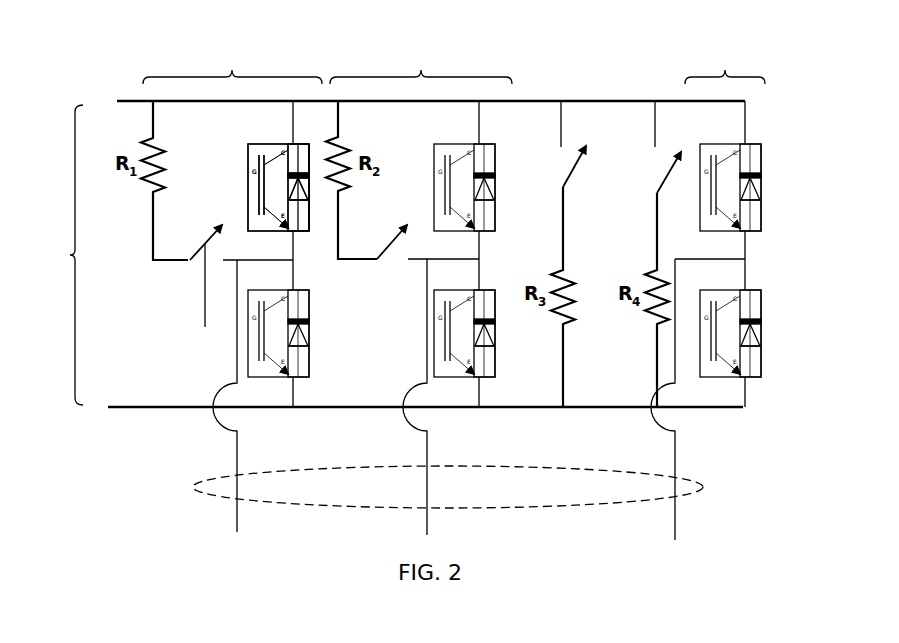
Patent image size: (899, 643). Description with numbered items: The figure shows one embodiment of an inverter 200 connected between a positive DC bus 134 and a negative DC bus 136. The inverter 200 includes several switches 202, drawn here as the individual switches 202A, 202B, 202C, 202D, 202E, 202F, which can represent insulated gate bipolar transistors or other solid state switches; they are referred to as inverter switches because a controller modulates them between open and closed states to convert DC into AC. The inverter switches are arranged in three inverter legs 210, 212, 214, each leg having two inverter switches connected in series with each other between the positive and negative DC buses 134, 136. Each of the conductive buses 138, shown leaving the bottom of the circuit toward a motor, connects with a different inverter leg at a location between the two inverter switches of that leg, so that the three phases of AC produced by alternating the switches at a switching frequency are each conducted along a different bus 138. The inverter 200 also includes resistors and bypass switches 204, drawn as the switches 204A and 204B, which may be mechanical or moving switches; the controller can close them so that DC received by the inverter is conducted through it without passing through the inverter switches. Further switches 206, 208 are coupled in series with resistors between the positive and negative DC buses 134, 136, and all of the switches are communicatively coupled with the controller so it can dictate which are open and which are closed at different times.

The positive DC bus 134 is at (126, 99).
The negative DC bus 136 is at (595, 408).
The conductive buses 138 is at (686, 483).
The inverter 200 is at (49, 255).
The switches 202 is at (245, 160).
The switch 202A is at (248, 170).
The switch 202B is at (434, 172).
The switch 202C is at (309, 326).
The switch 202D is at (494, 362).
The switch 202E is at (761, 181).
The switch 202F is at (761, 333).
The switches 204 is at (192, 268).
The switch 204A is at (195, 299).
The switch 204B is at (392, 247).
The switch 206 is at (566, 166).
The switch 208 is at (659, 184).
The inverter leg 210 is at (232, 59).
The inverter leg 212 is at (421, 59).
The inverter leg 214 is at (725, 59).